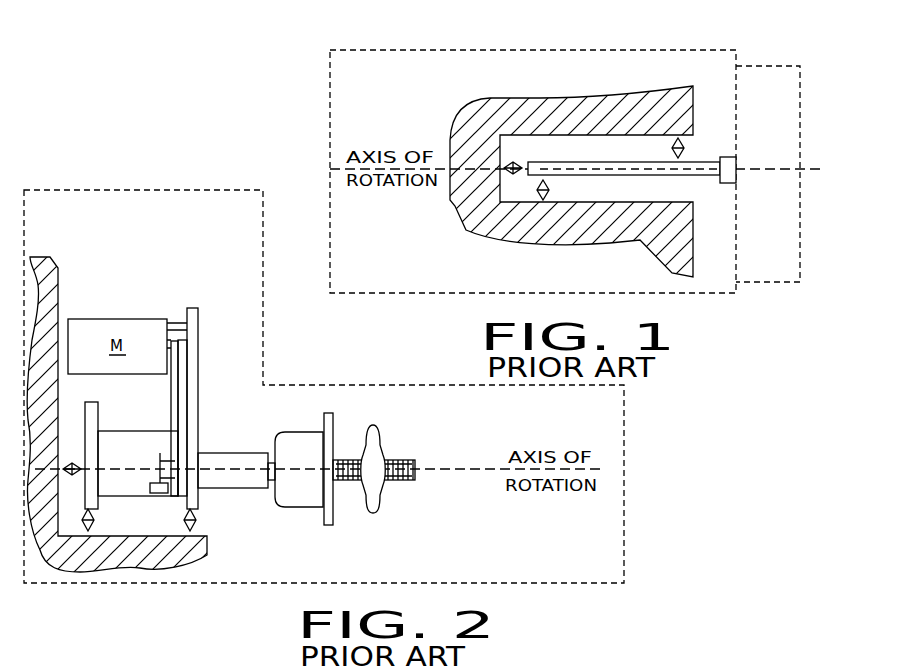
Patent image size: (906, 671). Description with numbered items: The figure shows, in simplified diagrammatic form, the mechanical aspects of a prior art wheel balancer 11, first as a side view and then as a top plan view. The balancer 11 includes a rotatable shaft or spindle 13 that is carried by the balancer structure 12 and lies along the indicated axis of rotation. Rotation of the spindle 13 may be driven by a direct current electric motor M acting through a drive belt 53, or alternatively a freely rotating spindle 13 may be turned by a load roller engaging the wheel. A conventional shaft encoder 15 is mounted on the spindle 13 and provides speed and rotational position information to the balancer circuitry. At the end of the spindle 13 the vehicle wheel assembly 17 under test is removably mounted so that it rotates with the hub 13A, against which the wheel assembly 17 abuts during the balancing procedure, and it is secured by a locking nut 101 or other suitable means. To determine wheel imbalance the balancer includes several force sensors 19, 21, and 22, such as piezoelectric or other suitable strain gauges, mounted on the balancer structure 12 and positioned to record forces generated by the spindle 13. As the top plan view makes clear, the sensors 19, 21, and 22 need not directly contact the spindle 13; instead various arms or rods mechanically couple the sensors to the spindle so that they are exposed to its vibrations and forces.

In FIG. 1, the wheel balancer 11 is at (615, 50).
In FIG. 1, the balancer structure 12 is at (630, 98).
In FIG. 2, the balancer structure 12 is at (53, 268).
In FIG. 1, the spindle 13 is at (580, 162).
In FIG. 2, the spindle 13 is at (400, 481).
In FIG. 2, the hub 13A is at (333, 520).
In FIG. 1, the shaft encoder 15 is at (726, 183).
In FIG. 2, the shaft encoder 15 is at (150, 487).
In FIG. 1, the wheel assembly 17 is at (760, 66).
In FIG. 1, the force sensor 19 is at (555, 190).
In FIG. 2, the force sensor 19 is at (95, 520).
In FIG. 1, the force sensor 21 is at (688, 148).
In FIG. 2, the force sensor 21 is at (198, 520).
In FIG. 1, the force sensor 22 is at (521, 168).
In FIG. 2, the force sensor 22 is at (72, 461).
In FIG. 2, the drive belt 53 is at (175, 407).
In FIG. 2, the locking nut 101 is at (381, 440).